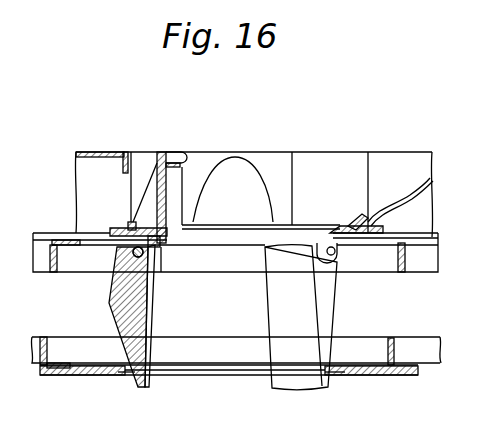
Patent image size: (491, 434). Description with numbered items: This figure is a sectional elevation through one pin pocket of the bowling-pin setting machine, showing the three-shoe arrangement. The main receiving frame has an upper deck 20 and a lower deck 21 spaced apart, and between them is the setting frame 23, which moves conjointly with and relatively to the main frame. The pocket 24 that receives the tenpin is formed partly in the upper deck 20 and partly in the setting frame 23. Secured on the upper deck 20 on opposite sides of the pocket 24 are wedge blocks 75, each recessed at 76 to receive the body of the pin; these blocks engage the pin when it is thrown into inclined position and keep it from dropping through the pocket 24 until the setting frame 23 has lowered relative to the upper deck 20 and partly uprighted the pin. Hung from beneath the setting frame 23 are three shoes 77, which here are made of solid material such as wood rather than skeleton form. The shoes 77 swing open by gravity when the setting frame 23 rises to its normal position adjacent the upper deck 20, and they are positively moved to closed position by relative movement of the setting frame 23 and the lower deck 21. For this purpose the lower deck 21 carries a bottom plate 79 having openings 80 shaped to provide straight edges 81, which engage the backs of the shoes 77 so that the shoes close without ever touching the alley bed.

The upper deck 20 is at (428, 172).
The lower deck 21 is at (423, 347).
The setting frame 23 is at (417, 257).
The pocket 24 is at (258, 222).
The wedge block 75 is at (270, 152).
The recess 76 is at (222, 173).
The shoe 77 is at (110, 302).
The bottom plate 79 is at (392, 375).
The opening 80 is at (215, 375).
The straight edge 81 is at (123, 372).